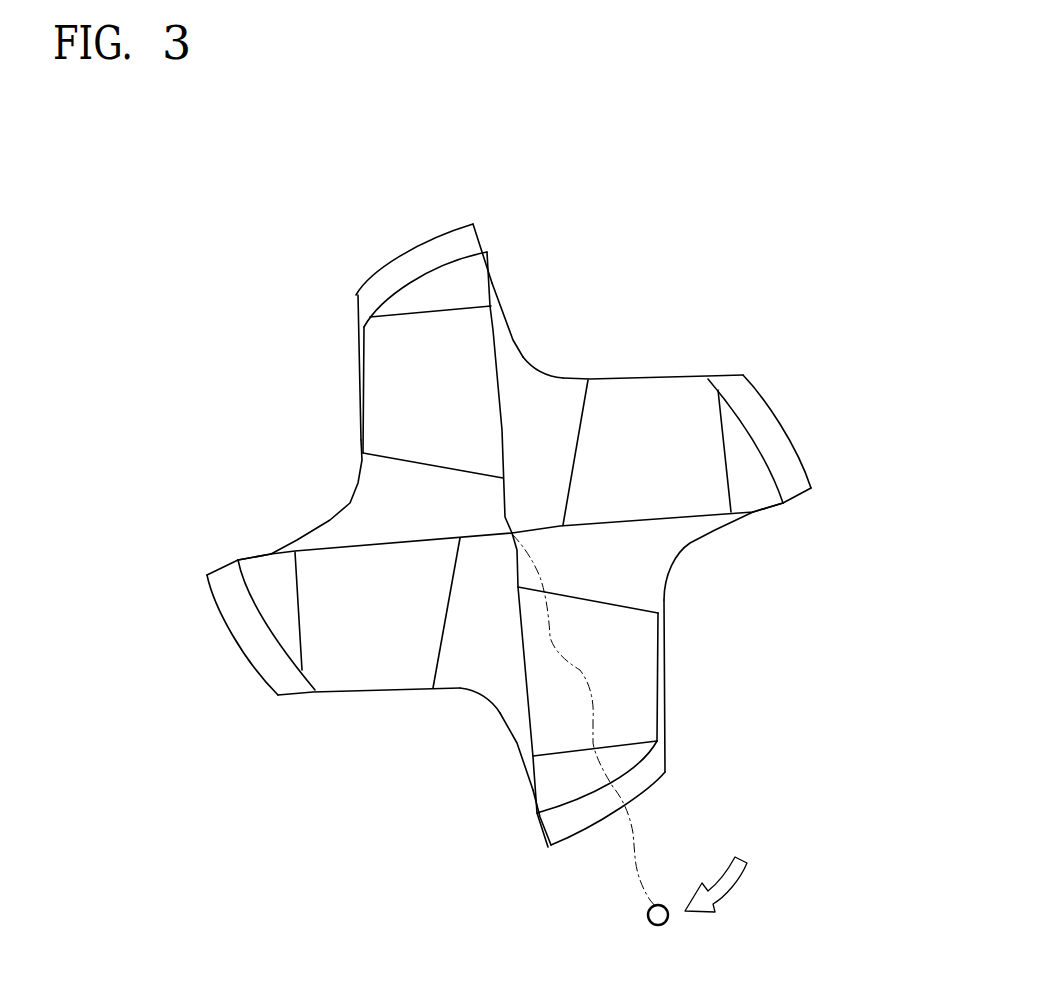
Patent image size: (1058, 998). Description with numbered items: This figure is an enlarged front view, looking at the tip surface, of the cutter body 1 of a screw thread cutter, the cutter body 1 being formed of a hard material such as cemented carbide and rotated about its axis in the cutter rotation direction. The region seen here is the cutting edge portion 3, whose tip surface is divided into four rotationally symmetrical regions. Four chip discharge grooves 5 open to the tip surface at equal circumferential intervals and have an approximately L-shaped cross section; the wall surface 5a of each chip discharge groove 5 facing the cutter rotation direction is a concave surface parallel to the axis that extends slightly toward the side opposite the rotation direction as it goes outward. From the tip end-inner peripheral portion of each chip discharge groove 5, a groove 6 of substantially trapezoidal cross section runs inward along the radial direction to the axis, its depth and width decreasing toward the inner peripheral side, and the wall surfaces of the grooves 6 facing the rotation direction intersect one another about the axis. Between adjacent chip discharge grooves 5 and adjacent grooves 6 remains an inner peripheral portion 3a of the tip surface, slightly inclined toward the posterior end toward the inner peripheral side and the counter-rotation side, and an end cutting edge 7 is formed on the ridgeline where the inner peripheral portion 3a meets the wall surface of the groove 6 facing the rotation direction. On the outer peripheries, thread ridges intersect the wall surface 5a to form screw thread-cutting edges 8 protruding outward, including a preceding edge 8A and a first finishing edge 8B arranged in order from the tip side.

The cutter body 1 is at (463, 162).
The cutting edge portion 3 is at (509, 434).
The inner peripheral portion 3a is at (360, 358).
The chip discharge groove 5 is at (290, 413).
The wall surface 5a is at (253, 555).
The groove 6 is at (385, 515).
The end cutting edge 7 is at (340, 548).
The screw thread-cutting edge 8 is at (500, 538).
The preceding edge 8A is at (240, 562).
The first finishing edge 8B is at (207, 575).